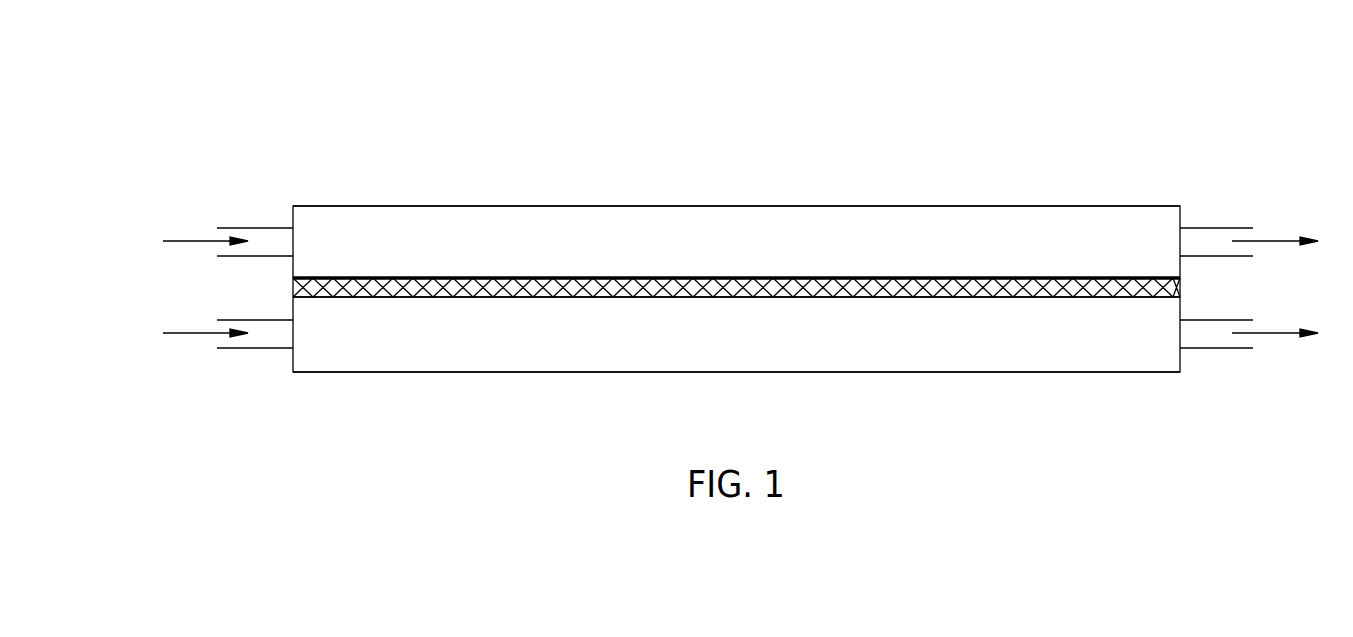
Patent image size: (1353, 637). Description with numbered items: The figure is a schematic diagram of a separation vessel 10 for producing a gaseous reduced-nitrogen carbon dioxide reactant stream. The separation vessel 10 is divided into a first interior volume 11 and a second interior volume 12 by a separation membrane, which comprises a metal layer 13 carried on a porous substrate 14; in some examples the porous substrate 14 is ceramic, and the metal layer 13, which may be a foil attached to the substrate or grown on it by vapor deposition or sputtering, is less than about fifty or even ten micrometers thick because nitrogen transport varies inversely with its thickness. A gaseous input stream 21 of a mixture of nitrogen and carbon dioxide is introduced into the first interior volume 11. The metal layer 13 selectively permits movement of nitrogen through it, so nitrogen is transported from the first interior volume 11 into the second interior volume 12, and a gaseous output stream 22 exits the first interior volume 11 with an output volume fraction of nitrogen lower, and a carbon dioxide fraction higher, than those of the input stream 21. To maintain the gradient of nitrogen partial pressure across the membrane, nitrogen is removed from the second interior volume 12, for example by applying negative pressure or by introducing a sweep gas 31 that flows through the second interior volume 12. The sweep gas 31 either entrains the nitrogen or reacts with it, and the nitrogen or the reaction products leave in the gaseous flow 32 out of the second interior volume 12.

The separation vessel 10 is at (448, 111).
The first interior volume 11 is at (512, 256).
The second interior volume 12 is at (992, 347).
The metal layer 13 is at (588, 262).
The porous substrate 14 is at (857, 290).
The gaseous input stream 21 is at (195, 241).
The gaseous output stream 22 is at (1265, 241).
The sweep gas 31 is at (200, 333).
The gaseous flow 32 is at (1263, 333).